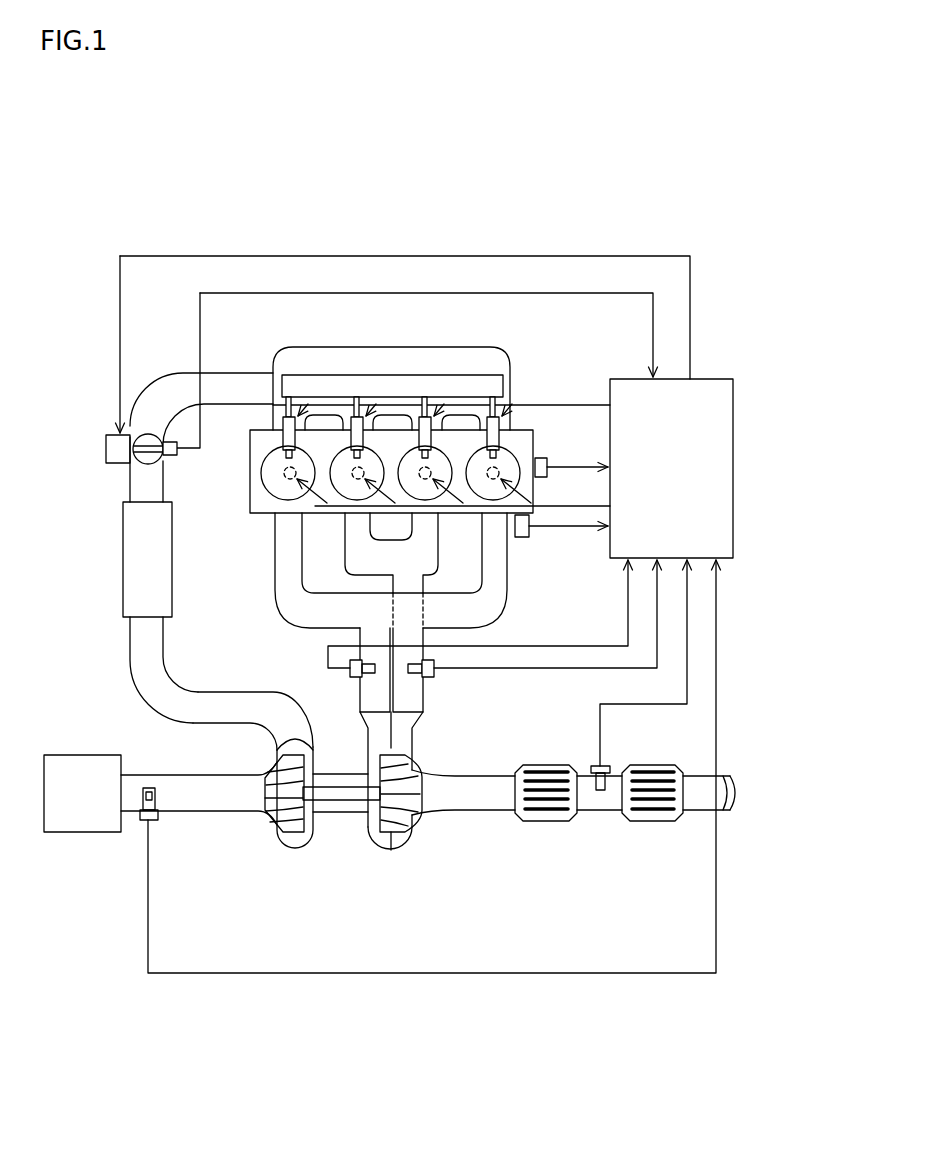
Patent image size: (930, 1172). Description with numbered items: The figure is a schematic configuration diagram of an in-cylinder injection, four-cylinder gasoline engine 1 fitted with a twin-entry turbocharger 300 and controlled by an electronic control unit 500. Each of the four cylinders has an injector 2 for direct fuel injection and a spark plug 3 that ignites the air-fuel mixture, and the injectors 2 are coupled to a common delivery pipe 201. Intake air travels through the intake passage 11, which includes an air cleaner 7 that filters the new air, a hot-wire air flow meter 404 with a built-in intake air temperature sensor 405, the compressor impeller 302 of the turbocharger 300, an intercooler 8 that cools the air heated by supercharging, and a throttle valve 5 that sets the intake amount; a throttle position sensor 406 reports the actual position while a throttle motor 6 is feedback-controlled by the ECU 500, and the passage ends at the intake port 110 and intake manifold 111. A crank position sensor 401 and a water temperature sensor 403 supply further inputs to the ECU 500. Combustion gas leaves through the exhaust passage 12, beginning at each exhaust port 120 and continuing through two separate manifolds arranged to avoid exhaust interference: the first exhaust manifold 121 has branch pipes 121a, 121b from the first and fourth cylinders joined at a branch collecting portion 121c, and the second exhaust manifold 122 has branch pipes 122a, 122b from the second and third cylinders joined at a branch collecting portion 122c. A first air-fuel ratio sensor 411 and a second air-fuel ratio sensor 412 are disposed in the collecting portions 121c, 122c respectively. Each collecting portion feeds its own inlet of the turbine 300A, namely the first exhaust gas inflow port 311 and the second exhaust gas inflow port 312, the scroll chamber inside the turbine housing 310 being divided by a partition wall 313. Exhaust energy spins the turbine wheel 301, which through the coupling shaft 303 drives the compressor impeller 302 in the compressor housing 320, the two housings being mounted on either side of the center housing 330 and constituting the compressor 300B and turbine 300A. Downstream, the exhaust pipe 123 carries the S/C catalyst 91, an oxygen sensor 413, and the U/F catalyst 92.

The engine 1 is at (232, 514).
The injector 2 is at (444, 404).
The spark plug 3 is at (262, 474).
The throttle valve 5 is at (137, 462).
The throttle motor 6 is at (106, 449).
The air cleaner 7 is at (65, 832).
The intercooler 8 is at (123, 557).
The intake passage 11 is at (118, 667).
The exhaust passage 12 is at (457, 827).
The S/C catalyst 91 is at (566, 816).
The U/F catalyst 92 is at (660, 816).
The intake port 110 is at (280, 432).
The intake manifold 111 is at (410, 341).
The exhaust port 120 is at (355, 518).
The first exhaust manifold 121 is at (276, 619).
The branch pipe 121a is at (292, 583).
The branch pipe 121b is at (493, 582).
The branch collecting portion 121c is at (370, 697).
The second exhaust manifold 122 is at (447, 578).
The branch pipe 122a is at (358, 525).
The branch pipe 122b is at (427, 542).
The branch collecting portion 122c is at (413, 700).
The exhaust pipe 123 is at (488, 806).
The delivery pipe 201 is at (487, 383).
The turbocharger 300 is at (351, 860).
The turbine 300A is at (392, 832).
The compressor 300B is at (296, 856).
The turbine wheel 301 is at (389, 859).
The compressor impeller 302 is at (266, 812).
The coupling shaft 303 is at (329, 801).
The turbine housing 310 is at (434, 851).
The first exhaust gas inflow port 311 is at (360, 720).
The second exhaust gas inflow port 312 is at (420, 720).
The partition wall 313 is at (415, 730).
The compressor housing 320 is at (283, 853).
The center housing 330 is at (278, 742).
The crank position sensor 401 is at (542, 478).
The water temperature sensor 403 is at (525, 537).
The air flow meter 404 is at (159, 818).
The intake air temperature sensor 405 is at (143, 801).
The throttle position sensor 406 is at (172, 457).
The first air-fuel ratio sensor 411 is at (349, 672).
The second air-fuel ratio sensor 412 is at (435, 668).
The oxygen sensor 413 is at (608, 764).
The electronic control unit 500 is at (717, 379).